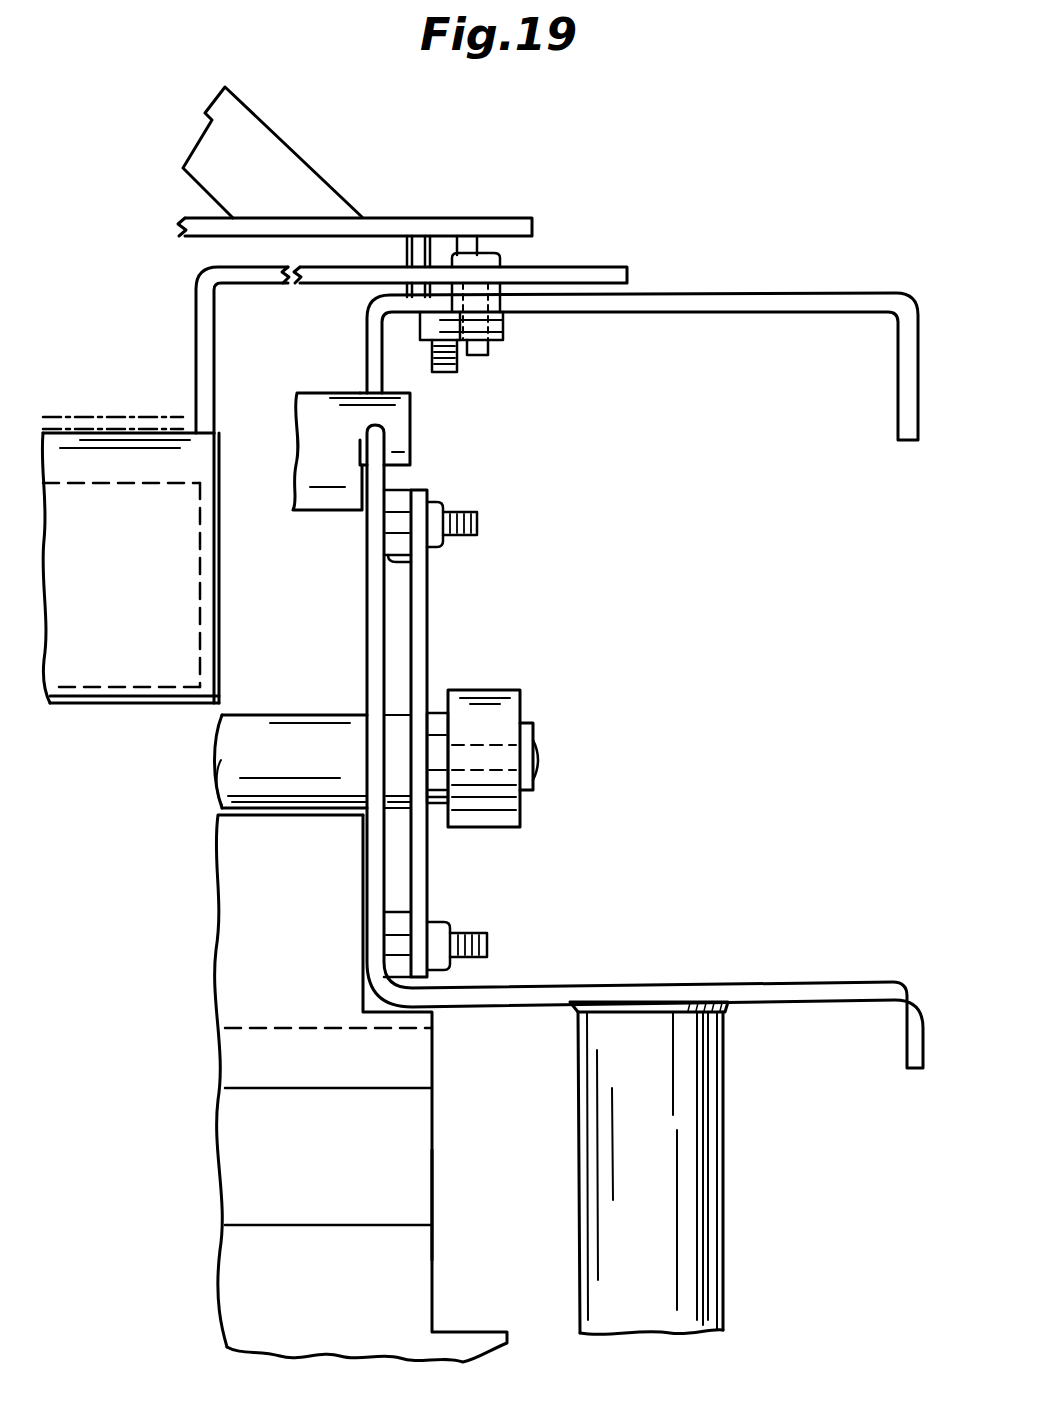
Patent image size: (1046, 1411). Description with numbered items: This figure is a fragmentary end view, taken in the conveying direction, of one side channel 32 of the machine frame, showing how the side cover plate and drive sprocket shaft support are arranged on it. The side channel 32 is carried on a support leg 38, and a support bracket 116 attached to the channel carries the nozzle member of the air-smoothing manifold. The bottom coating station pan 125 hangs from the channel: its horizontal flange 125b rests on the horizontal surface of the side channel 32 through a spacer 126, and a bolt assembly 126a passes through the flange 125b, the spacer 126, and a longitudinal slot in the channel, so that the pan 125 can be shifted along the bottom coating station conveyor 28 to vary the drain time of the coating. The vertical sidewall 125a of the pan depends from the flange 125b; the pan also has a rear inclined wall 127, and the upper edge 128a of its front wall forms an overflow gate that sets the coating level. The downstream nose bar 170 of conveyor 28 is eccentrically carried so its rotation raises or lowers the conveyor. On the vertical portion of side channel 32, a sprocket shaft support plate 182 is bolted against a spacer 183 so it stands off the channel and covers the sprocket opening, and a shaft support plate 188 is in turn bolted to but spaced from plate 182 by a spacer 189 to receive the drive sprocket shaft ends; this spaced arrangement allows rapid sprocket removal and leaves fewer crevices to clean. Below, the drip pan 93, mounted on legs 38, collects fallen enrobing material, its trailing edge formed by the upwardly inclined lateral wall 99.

The support bracket 116 is at (288, 157).
The horizontal flange 125b is at (567, 267).
The vertical sidewall 125a is at (215, 337).
The pan 125 is at (120, 703).
The spacer 126 is at (517, 286).
The bolt assembly 126a is at (488, 351).
The side channel 32 is at (740, 313).
The bottom coating station conveyor 28 is at (133, 412).
The downstream nose bar 170 is at (403, 423).
The upper edge 128a is at (152, 480).
The rear inclined wall 127 is at (137, 619).
The spacer 183 is at (392, 558).
The sprocket shaft support plate 182 is at (427, 635).
The shaft support plate 188 is at (513, 702).
The spacer 189 is at (437, 803).
The inclined lateral wall 99 is at (330, 912).
The support leg 38 is at (710, 1193).
The drip pan 93 is at (448, 1207).